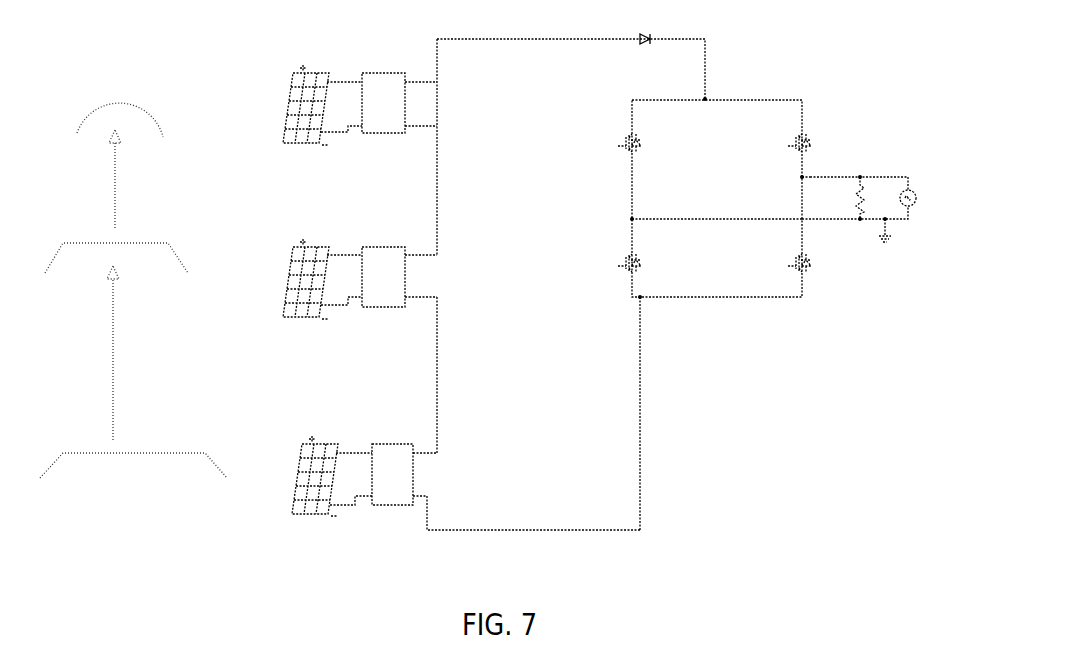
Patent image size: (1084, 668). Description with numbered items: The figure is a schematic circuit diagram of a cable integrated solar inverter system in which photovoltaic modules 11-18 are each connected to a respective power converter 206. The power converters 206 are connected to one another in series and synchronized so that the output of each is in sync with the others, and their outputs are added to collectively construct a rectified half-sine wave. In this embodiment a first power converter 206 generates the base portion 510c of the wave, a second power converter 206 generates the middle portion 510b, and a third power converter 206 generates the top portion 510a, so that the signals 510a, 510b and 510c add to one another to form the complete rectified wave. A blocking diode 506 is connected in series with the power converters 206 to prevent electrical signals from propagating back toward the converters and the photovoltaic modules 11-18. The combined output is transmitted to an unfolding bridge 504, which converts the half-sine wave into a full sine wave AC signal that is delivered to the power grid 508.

The top portion of the rectified (half-sine) wave 510a is at (200, 48).
The middle portion of the rectified (half-sine) wave 510b is at (162, 232).
The base portion of the rectified (half-sine) wave 510c is at (150, 450).
The photovoltaic modules 11-18 is at (294, 148).
The power converter 206 is at (414, 468).
The blocking diode 506 is at (752, 20).
The unfolding bridge 504 is at (895, 339).
The power grid 508 is at (960, 189).